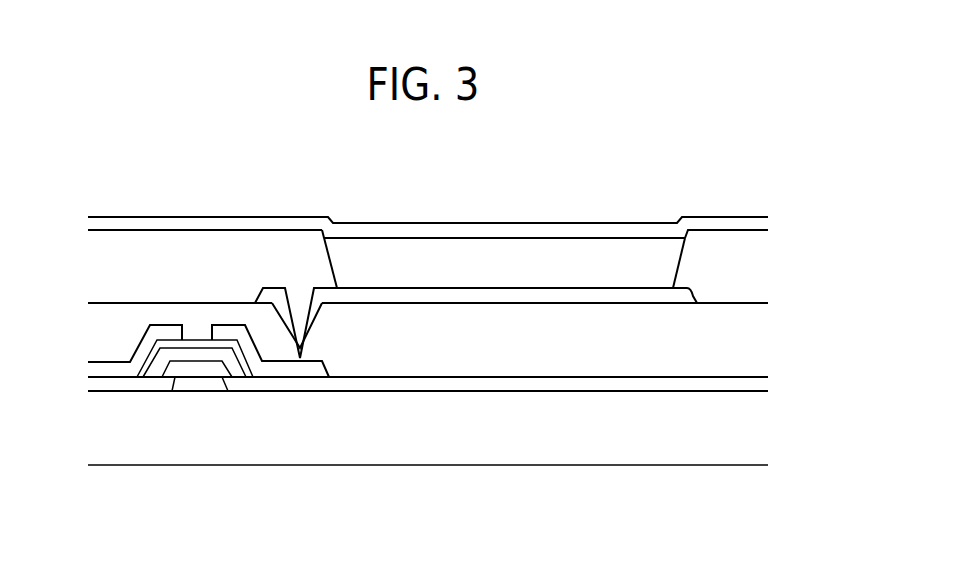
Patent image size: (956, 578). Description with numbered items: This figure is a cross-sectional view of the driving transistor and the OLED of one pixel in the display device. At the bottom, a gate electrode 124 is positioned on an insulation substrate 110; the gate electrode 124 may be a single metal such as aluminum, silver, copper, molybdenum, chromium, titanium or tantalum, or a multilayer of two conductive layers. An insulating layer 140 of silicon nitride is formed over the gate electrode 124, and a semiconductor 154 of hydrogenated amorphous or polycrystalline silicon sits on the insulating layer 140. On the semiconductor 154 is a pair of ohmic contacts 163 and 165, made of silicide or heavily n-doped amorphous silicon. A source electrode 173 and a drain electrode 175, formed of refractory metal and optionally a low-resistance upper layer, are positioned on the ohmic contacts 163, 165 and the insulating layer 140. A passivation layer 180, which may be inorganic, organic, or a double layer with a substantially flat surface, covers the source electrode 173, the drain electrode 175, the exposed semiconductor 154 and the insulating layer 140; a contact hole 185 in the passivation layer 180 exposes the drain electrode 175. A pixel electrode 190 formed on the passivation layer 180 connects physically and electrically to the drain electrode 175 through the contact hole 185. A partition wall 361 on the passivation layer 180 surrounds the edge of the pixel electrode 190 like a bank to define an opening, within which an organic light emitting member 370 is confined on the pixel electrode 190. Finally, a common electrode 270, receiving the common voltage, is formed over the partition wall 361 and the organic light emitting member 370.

The insulation substrate 110 is at (538, 455).
The gate electrode 124 is at (214, 383).
The insulating layer 140 is at (363, 383).
The semiconductor 154 is at (175, 372).
The ohmic contact 163 is at (152, 350).
The ohmic contact 165 is at (245, 350).
The source electrode 173 is at (142, 368).
The drain electrode 175 is at (243, 340).
The passivation layer 180 is at (615, 355).
The contact hole 185 is at (298, 345).
The pixel electrode 190 is at (623, 293).
The common electrode 270 is at (432, 232).
The partition wall 361 is at (113, 247).
The organic light emitting member 370 is at (540, 265).